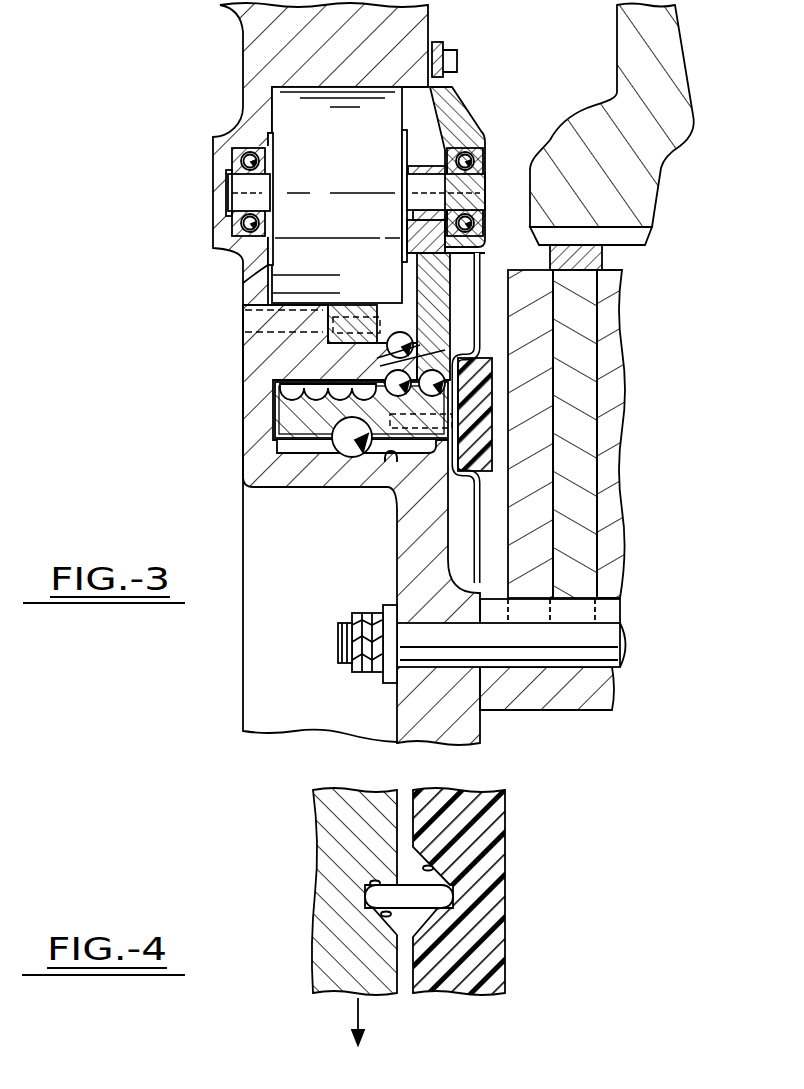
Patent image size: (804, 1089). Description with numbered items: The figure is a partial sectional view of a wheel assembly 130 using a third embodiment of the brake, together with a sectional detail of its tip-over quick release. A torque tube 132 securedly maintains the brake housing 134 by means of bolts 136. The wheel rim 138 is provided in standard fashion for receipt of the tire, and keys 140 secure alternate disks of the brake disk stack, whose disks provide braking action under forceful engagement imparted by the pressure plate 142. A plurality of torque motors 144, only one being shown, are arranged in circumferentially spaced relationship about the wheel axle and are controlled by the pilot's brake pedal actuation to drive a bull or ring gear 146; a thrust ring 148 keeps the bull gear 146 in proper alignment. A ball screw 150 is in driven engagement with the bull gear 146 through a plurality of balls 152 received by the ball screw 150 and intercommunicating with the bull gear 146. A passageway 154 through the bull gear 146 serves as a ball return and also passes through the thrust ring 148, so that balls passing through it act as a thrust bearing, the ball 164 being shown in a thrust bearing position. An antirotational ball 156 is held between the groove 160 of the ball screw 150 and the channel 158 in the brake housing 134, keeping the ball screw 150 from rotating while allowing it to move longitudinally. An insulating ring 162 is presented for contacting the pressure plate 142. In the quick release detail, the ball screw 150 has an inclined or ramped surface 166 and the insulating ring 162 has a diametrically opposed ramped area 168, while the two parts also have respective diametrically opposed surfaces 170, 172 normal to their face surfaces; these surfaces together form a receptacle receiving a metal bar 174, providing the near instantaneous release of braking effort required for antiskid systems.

In FIG. 3, the wheel assembly 130 is at (168, 96).
In FIG. 3, the torque tube 132 is at (525, 707).
In FIG. 3, the brake housing 134 is at (410, 567).
In FIG. 3, the bolts 136 is at (338, 635).
In FIG. 3, the wheel rim 138 is at (675, 63).
In FIG. 3, the keys 140 is at (640, 237).
In FIG. 3, the pressure plate 142 is at (543, 495).
In FIG. 3, the torque motors 144 is at (292, 250).
In FIG. 3, the bull gear 146 is at (445, 272).
In FIG. 3, the thrust ring 148 is at (343, 340).
In FIG. 3, the ball screw 150 is at (283, 410).
In FIG. 4, the ball screw 150 is at (327, 878).
In FIG. 3, the balls 152 is at (386, 379).
In FIG. 3, the passageway 154 is at (440, 358).
In FIG. 3, the antirotational ball 156 is at (353, 458).
In FIG. 3, the channel 158 is at (392, 457).
In FIG. 3, the groove 160 is at (305, 418).
In FIG. 3, the insulating ring 162 is at (487, 373).
In FIG. 4, the insulating ring 162 is at (498, 880).
In FIG. 3, the ball 164 is at (400, 332).
In FIG. 4, the inclined surface 166 is at (387, 913).
In FIG. 4, the inclined surface 168 is at (430, 868).
In FIG. 4, the surface 170 is at (373, 883).
In FIG. 4, the surface 172 is at (433, 908).
In FIG. 4, the metal bar 174 is at (443, 902).